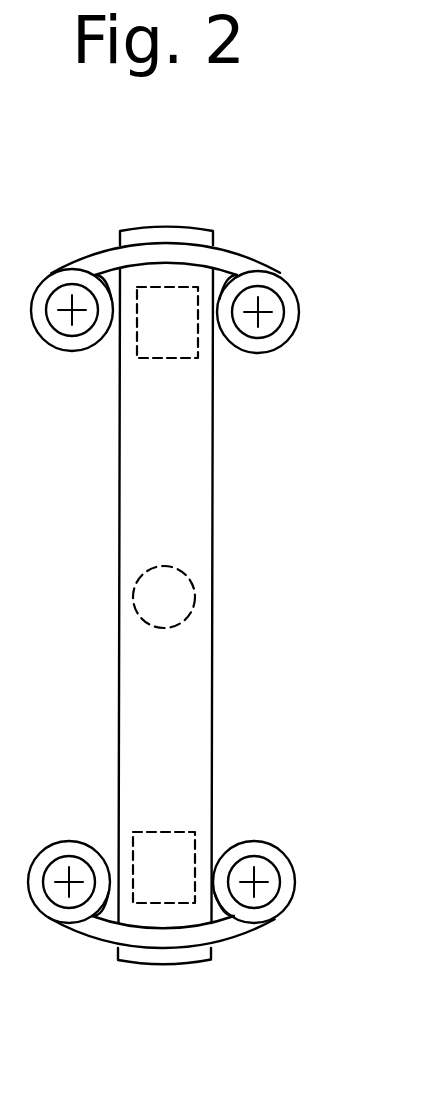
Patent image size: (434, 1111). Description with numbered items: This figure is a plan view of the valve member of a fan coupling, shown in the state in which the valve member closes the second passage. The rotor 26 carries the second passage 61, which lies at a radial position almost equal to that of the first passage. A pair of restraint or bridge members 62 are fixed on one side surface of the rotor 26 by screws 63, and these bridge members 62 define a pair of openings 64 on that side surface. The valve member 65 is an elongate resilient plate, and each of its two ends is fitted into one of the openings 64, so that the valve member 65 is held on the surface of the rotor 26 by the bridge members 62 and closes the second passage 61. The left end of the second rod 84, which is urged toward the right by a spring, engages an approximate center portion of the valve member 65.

The rotor 26 is at (265, 547).
The second passage 61 is at (188, 333).
The bridge members 62 is at (238, 262).
The screws 63 is at (268, 325).
The openings 64 is at (97, 244).
The valve member 65 is at (201, 457).
The second rod 84 is at (180, 613).